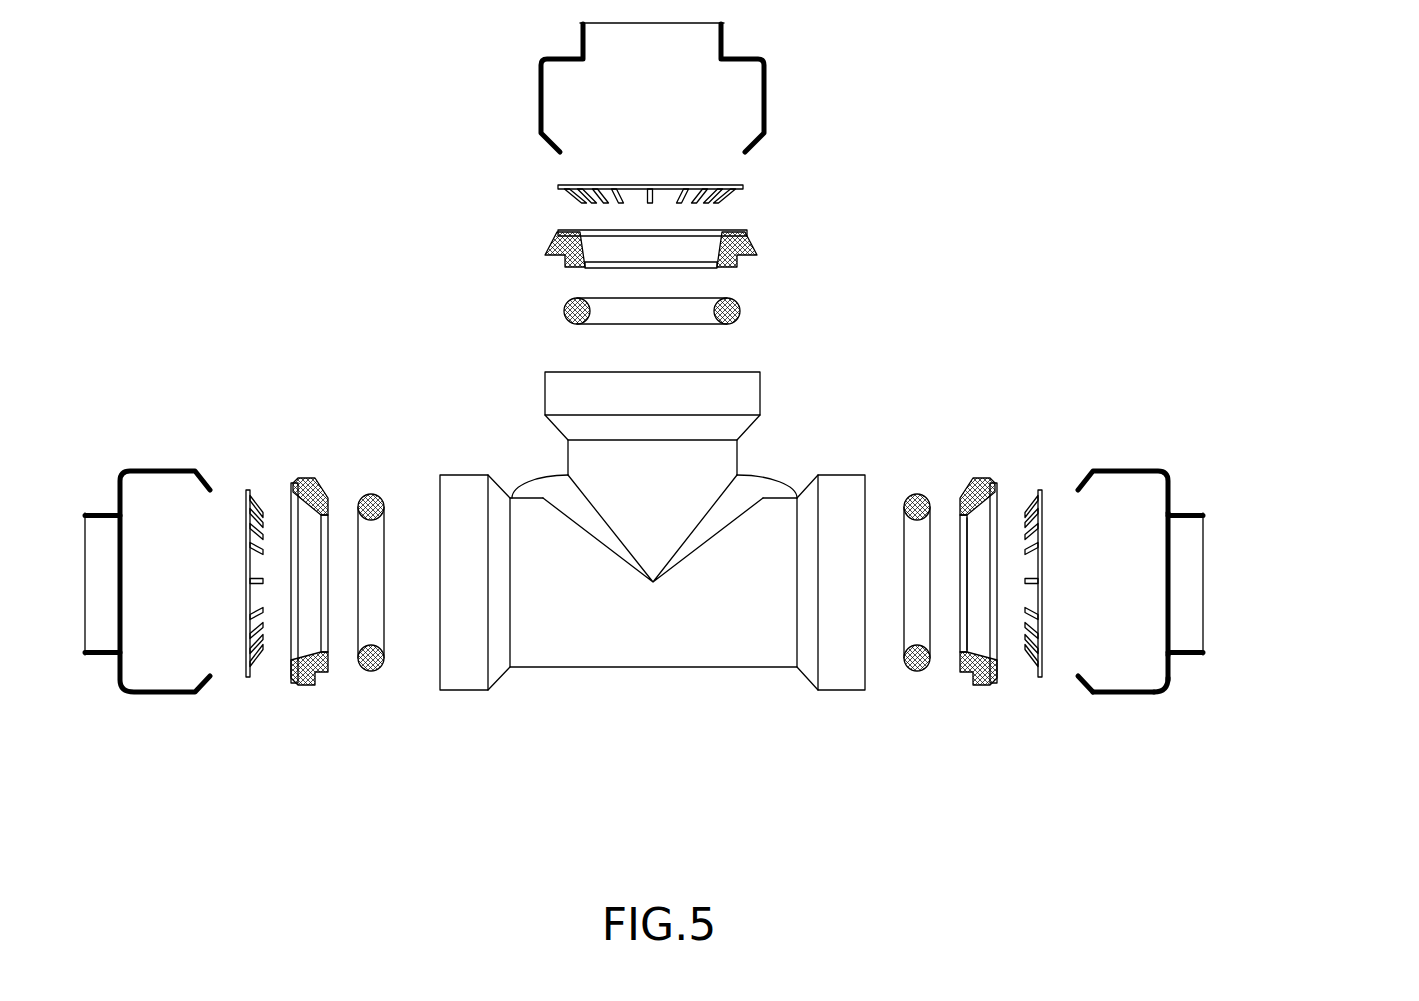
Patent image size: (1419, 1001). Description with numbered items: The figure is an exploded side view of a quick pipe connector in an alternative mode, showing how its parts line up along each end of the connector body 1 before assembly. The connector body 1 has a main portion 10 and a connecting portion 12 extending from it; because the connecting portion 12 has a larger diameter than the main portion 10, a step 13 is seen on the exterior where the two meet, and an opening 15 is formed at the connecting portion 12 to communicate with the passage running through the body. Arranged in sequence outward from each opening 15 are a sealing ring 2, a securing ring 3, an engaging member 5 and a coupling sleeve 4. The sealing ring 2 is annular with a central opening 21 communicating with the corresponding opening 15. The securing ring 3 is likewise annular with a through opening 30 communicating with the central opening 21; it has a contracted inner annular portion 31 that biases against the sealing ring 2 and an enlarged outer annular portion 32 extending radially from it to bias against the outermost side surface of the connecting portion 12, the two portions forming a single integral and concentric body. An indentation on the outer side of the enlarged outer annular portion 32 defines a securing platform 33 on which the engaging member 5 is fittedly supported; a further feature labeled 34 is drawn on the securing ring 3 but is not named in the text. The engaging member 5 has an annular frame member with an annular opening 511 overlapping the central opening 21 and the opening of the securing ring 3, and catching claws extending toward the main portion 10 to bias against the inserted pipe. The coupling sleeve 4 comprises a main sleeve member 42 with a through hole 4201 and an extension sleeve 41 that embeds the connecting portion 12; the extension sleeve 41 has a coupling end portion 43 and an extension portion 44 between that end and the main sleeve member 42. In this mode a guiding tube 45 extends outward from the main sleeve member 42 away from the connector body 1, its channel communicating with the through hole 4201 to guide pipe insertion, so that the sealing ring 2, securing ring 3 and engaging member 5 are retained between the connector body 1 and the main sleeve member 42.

The connector body 1 is at (641, 522).
The main portion 10 is at (552, 633).
The connecting portion 12 is at (841, 681).
The step 13 is at (808, 488).
The opening 15 is at (435, 510).
The sealing ring 2 is at (865, 669).
The central opening 21 is at (903, 590).
The securing ring 3 is at (907, 584).
The through opening 30 is at (968, 535).
The contracted inner annular portion 31 is at (962, 500).
The enlarged outer annular portion 32 is at (982, 487).
The securing platform 33 is at (997, 492).
The lower flange of sealing ring 34 is at (982, 685).
The coupling sleeve 4 is at (1246, 607).
The extension sleeve 41 is at (1137, 470).
The main sleeve member 42 is at (1167, 668).
The coupling end portion 43 is at (1085, 685).
The extension portion 44 is at (1157, 693).
The guiding tube 45 is at (1190, 512).
The through hole 4201 is at (1291, 537).
The engaging member 5 is at (1181, 619).
The annular opening 511 is at (1043, 580).